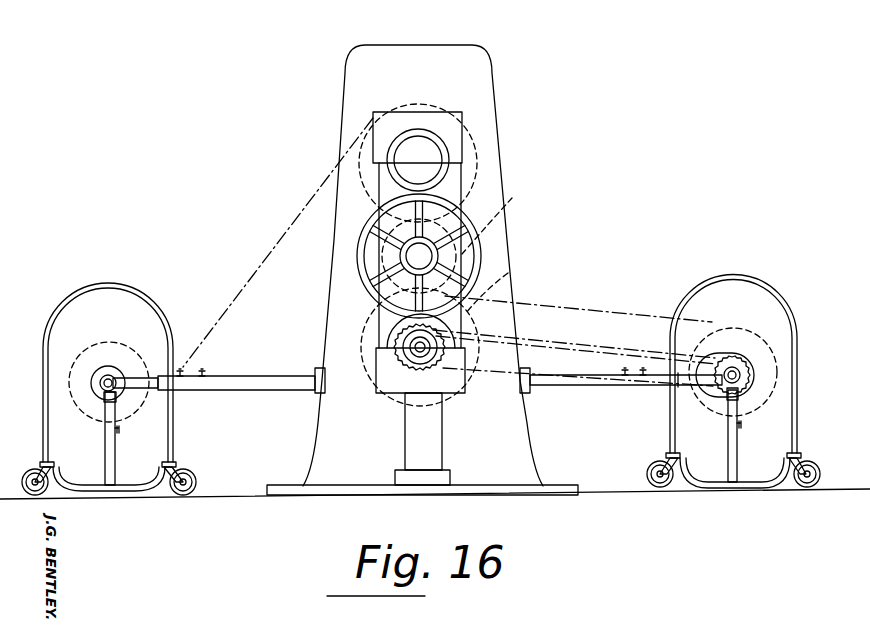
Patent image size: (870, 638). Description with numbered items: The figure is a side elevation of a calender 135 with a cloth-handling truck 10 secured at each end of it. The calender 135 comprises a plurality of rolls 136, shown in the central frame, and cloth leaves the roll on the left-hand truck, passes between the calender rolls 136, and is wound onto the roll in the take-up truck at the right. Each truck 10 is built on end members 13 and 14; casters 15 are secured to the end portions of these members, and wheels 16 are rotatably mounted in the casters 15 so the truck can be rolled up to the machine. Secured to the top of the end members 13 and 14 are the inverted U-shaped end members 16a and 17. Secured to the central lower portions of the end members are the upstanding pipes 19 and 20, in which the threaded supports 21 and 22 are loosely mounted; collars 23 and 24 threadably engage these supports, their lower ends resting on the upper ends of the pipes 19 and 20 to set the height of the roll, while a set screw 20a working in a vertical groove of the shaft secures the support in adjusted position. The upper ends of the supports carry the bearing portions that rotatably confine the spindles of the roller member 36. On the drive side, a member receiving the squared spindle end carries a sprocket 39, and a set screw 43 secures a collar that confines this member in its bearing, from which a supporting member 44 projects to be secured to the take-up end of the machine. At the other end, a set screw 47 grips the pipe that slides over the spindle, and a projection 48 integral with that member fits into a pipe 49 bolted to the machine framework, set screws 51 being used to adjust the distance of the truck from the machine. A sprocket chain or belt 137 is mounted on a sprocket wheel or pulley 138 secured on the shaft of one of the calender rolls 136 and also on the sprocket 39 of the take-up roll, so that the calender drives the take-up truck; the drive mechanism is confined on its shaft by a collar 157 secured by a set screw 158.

The truck 10 is at (137, 284).
The end member 13 is at (724, 458).
The end member 14 is at (130, 476).
The caster 15 is at (47, 480).
The wheel 16 is at (25, 474).
The inverted U-shaped end member 16a is at (797, 380).
The inverted U-shaped end member 17 is at (159, 309).
The upstanding pipe 19 is at (738, 452).
The upstanding pipe 20 is at (105, 448).
The set screw 20a is at (121, 430).
The threaded support 21 is at (745, 383).
The threaded support 22 is at (98, 383).
The collar 23 is at (726, 400).
The collar 24 is at (104, 405).
The roller member 36 is at (125, 364).
The sprocket 39 is at (740, 368).
The set screw 43 is at (690, 389).
The supporting member 44 is at (731, 366).
The set screw 47 is at (100, 377).
The projection 48 is at (140, 370).
The pipe 49 is at (262, 383).
The set screw 51 is at (183, 370).
The calender 135 is at (510, 233).
The calender roll 136 is at (478, 136).
The sprocket chain or belt 137 is at (590, 330).
The sprocket wheel or pulley 138 is at (470, 339).
The collar 157 is at (420, 370).
The set screw 158 is at (400, 338).